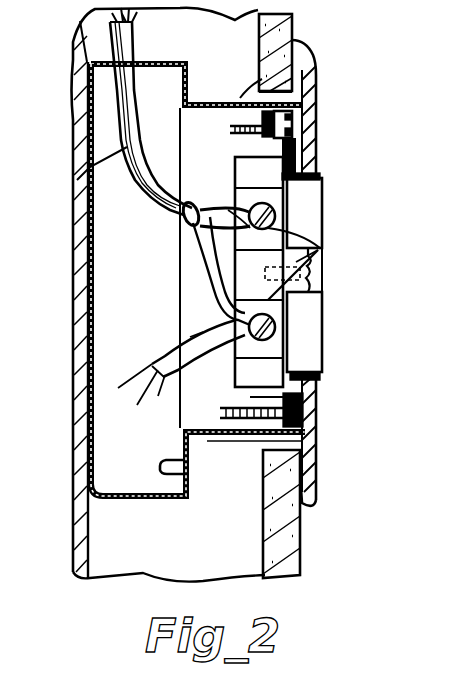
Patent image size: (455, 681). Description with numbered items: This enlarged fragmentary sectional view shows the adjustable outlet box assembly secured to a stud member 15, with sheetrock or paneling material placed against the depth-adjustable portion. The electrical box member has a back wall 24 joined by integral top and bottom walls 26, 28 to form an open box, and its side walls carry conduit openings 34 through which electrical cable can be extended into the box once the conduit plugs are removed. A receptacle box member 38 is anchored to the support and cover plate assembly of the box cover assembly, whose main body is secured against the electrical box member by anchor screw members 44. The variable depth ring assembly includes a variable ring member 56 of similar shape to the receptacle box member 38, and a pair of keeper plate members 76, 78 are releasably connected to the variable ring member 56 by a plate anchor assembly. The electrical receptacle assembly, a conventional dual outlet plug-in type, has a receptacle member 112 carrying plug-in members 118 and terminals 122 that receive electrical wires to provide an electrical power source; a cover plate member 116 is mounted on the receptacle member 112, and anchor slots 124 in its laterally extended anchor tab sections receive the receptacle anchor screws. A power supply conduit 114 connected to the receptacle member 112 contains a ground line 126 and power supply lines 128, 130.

The stud member 15 is at (161, 563).
The back wall 24 is at (93, 440).
The top wall 26 is at (244, 52).
The bottom wall 28 is at (121, 500).
The conduit openings 34 is at (128, 52).
The receptacle box member 38 is at (247, 81).
The anchor screw members 44 is at (195, 462).
The variable ring member 56 is at (313, 75).
The keeper plate member 76 is at (315, 112).
The keeper plate member 78 is at (318, 386).
The receptacle member 112 is at (300, 210).
The power supply conduit 114 is at (78, 180).
The cover plate member 116 is at (320, 478).
The plug-in members 118 is at (300, 333).
The terminals 122 is at (322, 248).
The anchor slots 124 is at (320, 423).
The ground line 126 is at (215, 271).
The power supply line 128 is at (180, 233).
The power supply line 130 is at (200, 280).